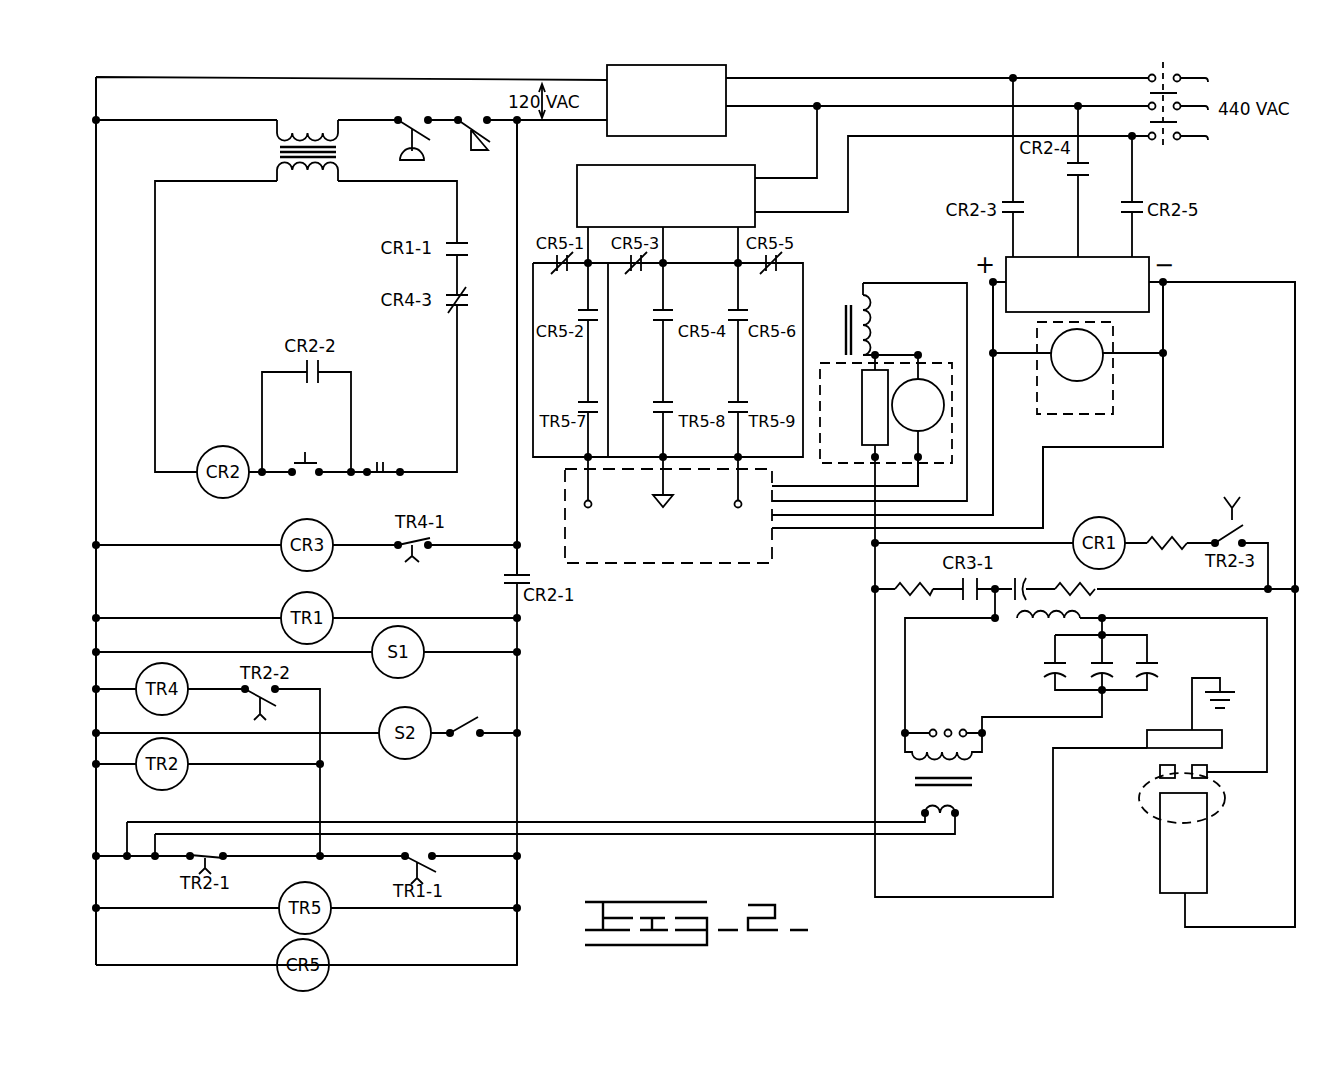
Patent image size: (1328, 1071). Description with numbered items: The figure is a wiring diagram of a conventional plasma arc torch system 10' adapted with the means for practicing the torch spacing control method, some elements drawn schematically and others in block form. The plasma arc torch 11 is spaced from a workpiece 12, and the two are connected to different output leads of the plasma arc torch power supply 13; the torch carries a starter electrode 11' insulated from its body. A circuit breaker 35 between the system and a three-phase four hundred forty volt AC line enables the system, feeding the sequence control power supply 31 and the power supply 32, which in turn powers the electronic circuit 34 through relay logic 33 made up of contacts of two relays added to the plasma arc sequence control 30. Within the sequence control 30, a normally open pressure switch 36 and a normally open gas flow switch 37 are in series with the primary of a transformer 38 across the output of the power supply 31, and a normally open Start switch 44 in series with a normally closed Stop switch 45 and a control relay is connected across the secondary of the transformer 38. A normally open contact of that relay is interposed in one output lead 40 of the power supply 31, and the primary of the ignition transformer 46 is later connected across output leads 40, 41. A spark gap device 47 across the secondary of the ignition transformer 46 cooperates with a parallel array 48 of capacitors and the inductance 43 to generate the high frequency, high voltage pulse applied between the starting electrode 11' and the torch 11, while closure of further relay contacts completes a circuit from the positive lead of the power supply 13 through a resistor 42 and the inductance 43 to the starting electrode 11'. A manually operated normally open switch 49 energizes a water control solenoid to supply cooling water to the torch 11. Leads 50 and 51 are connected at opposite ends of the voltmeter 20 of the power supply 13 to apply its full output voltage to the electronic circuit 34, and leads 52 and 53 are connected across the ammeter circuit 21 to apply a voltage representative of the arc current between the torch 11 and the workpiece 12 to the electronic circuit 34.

The plasma arc torch system 10' is at (1224, 565).
The plasma arc torch 11 is at (1182, 833).
The starter electrode 11' is at (1211, 756).
The workpiece 12 is at (1163, 728).
The plasma arc torch power supply 13 is at (1053, 299).
The voltmeter 20 is at (1058, 410).
The ammeter circuit 21 is at (826, 427).
The plasma arc sequence control 30 is at (523, 680).
The sequence control power supply 31 is at (637, 117).
The power supply 32 is at (640, 212).
The relay logic 33 is at (805, 282).
The electronic circuit 34 is at (645, 558).
The circuit breaker 35 is at (1158, 72).
The pressure switch 36 is at (418, 117).
The gas flow switch 37 is at (473, 116).
The transformer 38 is at (277, 153).
The output lead 40 is at (517, 360).
The output lead 41 is at (96, 274).
The resistor 42 is at (915, 566).
The inductance 43 is at (1044, 626).
The Start switch 44 is at (320, 438).
The Stop switch 45 is at (378, 462).
The ignition transformer 46 is at (975, 782).
The spark gap device 47 is at (950, 724).
The parallel array of capacitors 48 is at (1150, 658).
The switch 49 is at (464, 718).
The lead 50 is at (1165, 410).
The lead 51 is at (996, 444).
The lead 52 is at (950, 333).
The lead 53 is at (925, 479).